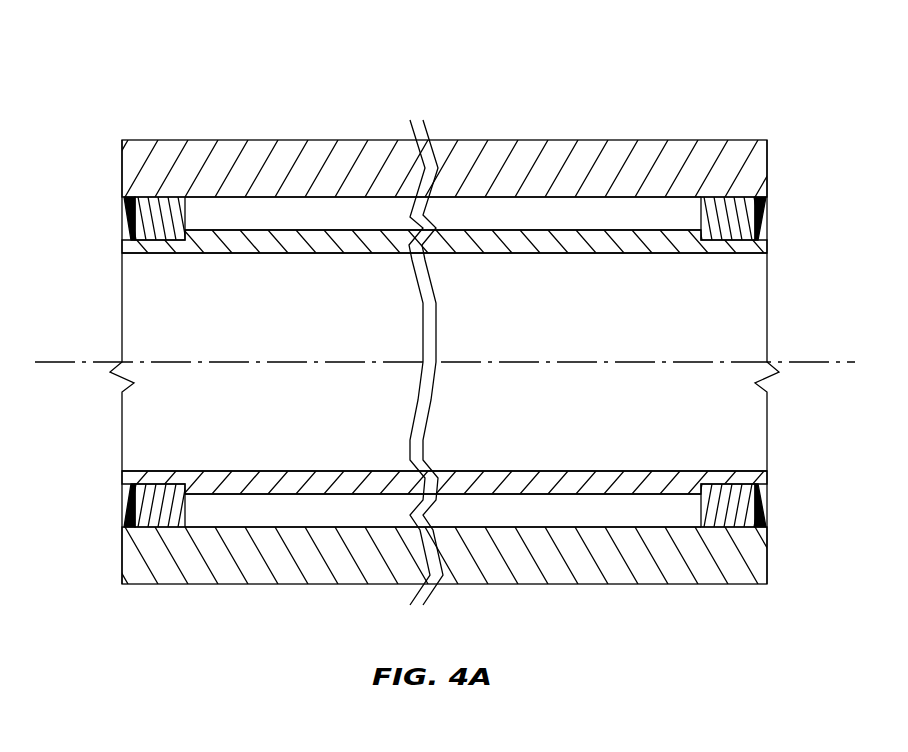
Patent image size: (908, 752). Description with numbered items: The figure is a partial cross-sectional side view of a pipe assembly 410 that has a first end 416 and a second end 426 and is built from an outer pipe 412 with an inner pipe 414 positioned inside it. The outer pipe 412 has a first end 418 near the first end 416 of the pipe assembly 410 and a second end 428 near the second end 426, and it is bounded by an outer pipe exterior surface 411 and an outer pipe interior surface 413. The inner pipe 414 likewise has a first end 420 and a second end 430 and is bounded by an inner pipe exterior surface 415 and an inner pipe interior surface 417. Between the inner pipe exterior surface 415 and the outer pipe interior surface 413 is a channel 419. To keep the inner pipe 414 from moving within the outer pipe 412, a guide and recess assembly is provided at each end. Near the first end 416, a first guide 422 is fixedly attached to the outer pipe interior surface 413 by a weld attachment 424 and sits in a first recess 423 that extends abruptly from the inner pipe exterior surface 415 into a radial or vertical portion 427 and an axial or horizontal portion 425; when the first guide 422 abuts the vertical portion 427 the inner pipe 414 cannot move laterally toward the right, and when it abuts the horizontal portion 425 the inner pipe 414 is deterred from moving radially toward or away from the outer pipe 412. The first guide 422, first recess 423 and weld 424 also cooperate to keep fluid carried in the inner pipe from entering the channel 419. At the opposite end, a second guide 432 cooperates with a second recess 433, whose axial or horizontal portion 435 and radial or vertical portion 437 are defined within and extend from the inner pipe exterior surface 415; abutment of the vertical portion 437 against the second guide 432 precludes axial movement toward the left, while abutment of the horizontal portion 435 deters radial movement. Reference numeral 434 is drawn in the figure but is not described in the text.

The pipe assembly 410 is at (846, 478).
The outer pipe exterior surface 411 is at (677, 150).
The outer pipe 412 is at (455, 170).
The outer pipe interior surface 413 is at (615, 175).
The inner pipe 414 is at (455, 248).
The inner pipe exterior surface 415 is at (583, 228).
The first end of pipe assembly 416 is at (810, 563).
The inner pipe interior surface 417 is at (541, 252).
The first end of outer pipe 418 is at (769, 156).
The channel 419 is at (343, 222).
The first end of inner pipe 420 is at (769, 241).
The first guide 422 is at (720, 215).
The first recess 423 is at (697, 252).
The weld attachment 424 is at (760, 215).
The axial or horizontal portion of first recess 425 is at (736, 238).
The second end of pipe assembly 426 is at (70, 563).
The radial or vertical portion of first recess 427 is at (697, 235).
The second end of outer pipe 428 is at (121, 156).
The second end of inner pipe 430 is at (120, 241).
The second guide 432 is at (150, 215).
The second recess 433 is at (188, 247).
The first seal bevel 434 is at (128, 220).
The axial or horizontal portion of second recess 435 is at (141, 247).
The radial or vertical portion of second recess 437 is at (190, 233).